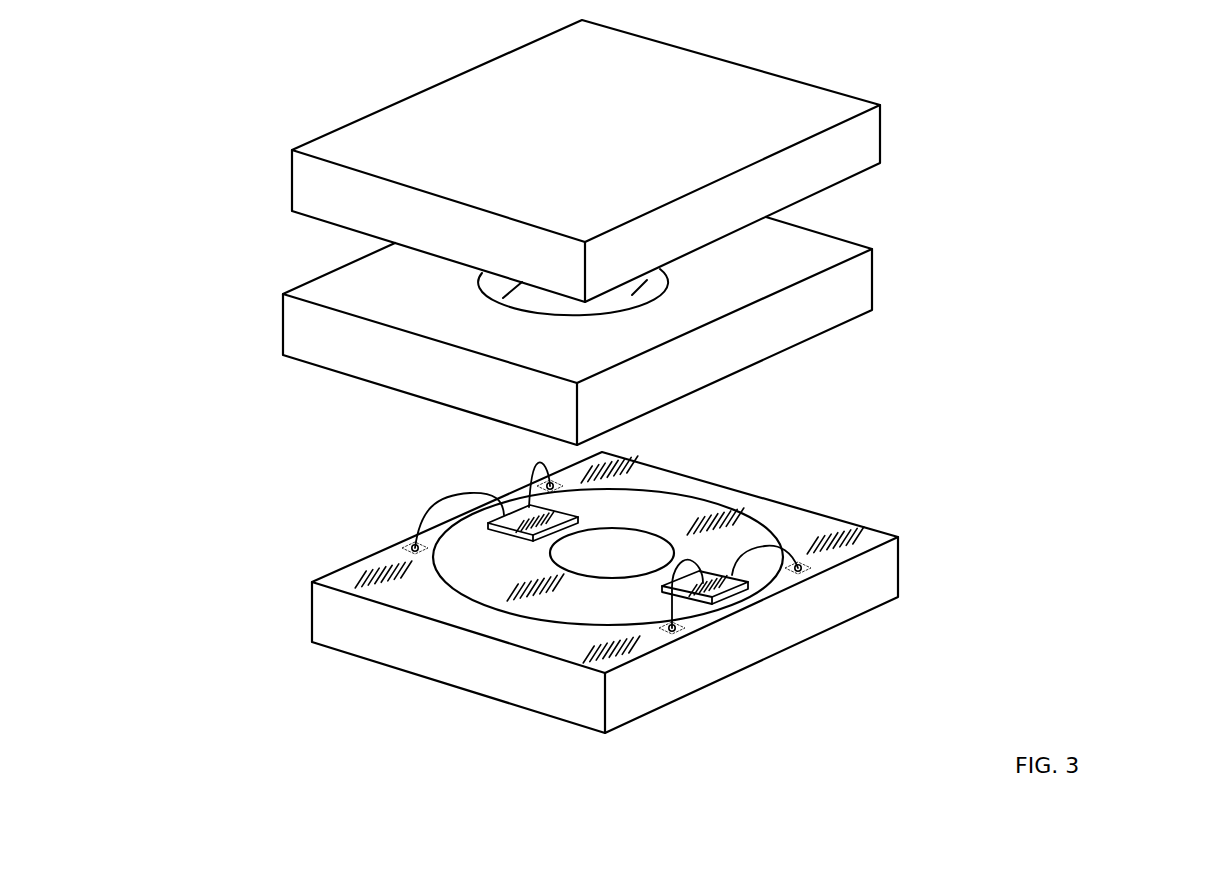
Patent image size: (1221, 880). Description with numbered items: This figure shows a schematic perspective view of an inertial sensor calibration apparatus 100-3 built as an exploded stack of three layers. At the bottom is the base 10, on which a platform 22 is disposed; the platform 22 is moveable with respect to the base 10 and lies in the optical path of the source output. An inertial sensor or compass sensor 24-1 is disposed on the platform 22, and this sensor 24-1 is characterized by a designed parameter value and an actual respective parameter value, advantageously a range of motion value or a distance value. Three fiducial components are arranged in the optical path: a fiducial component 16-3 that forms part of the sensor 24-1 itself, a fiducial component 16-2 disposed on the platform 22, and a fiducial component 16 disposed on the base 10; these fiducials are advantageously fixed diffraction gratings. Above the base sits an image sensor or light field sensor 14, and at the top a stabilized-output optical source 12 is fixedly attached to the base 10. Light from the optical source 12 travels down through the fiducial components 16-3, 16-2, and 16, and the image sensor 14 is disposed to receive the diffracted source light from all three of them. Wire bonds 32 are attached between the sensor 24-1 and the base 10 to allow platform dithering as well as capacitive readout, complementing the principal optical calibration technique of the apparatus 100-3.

The inertial sensor calibration apparatus 100-3 is at (735, 376).
The stabilized-output optical source 12 is at (868, 132).
The image sensor or light field sensor 14 is at (868, 275).
The base 10 is at (853, 620).
The platform 22 is at (623, 498).
The fiducial component 16 is at (838, 535).
The fiducial component 16-2 is at (717, 512).
The fiducial component 16-3 is at (533, 532).
The inertial sensor or compass sensor 24-1 is at (578, 517).
The wire bonds 32 is at (425, 505).